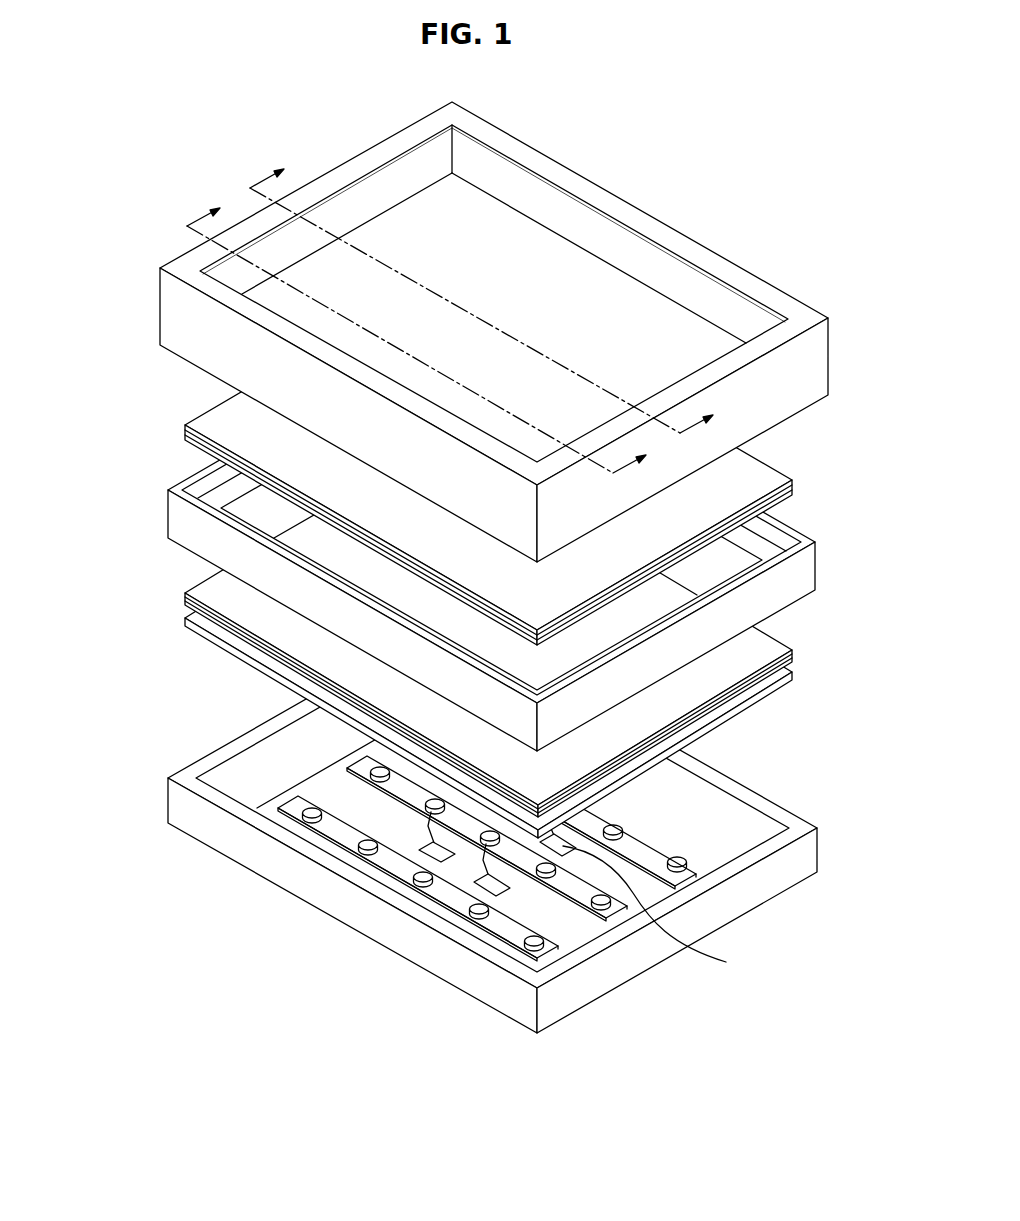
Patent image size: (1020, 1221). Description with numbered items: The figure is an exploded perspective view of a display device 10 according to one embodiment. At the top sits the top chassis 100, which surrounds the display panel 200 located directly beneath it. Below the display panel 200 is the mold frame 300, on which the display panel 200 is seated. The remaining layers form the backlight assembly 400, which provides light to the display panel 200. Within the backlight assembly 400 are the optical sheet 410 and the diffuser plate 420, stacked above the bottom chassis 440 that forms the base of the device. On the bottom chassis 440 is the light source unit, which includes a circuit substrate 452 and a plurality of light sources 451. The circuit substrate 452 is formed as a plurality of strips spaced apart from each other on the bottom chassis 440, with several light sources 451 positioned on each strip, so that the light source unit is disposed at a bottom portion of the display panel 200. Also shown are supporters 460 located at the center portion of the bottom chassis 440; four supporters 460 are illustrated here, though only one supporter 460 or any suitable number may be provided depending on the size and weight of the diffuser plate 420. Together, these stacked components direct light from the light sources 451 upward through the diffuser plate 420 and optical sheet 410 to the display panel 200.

The display device 10 is at (171, 115).
The top chassis 100 is at (183, 314).
The display panel 200 is at (213, 427).
The mold frame 300 is at (808, 567).
The backlight assembly 400 is at (97, 579).
The optical sheet 410 is at (178, 598).
The diffuser plate 420 is at (185, 625).
The bottom chassis 440 is at (185, 800).
The light source 451 is at (650, 853).
The circuit substrate 452 is at (677, 862).
The supporter 460 is at (591, 893).